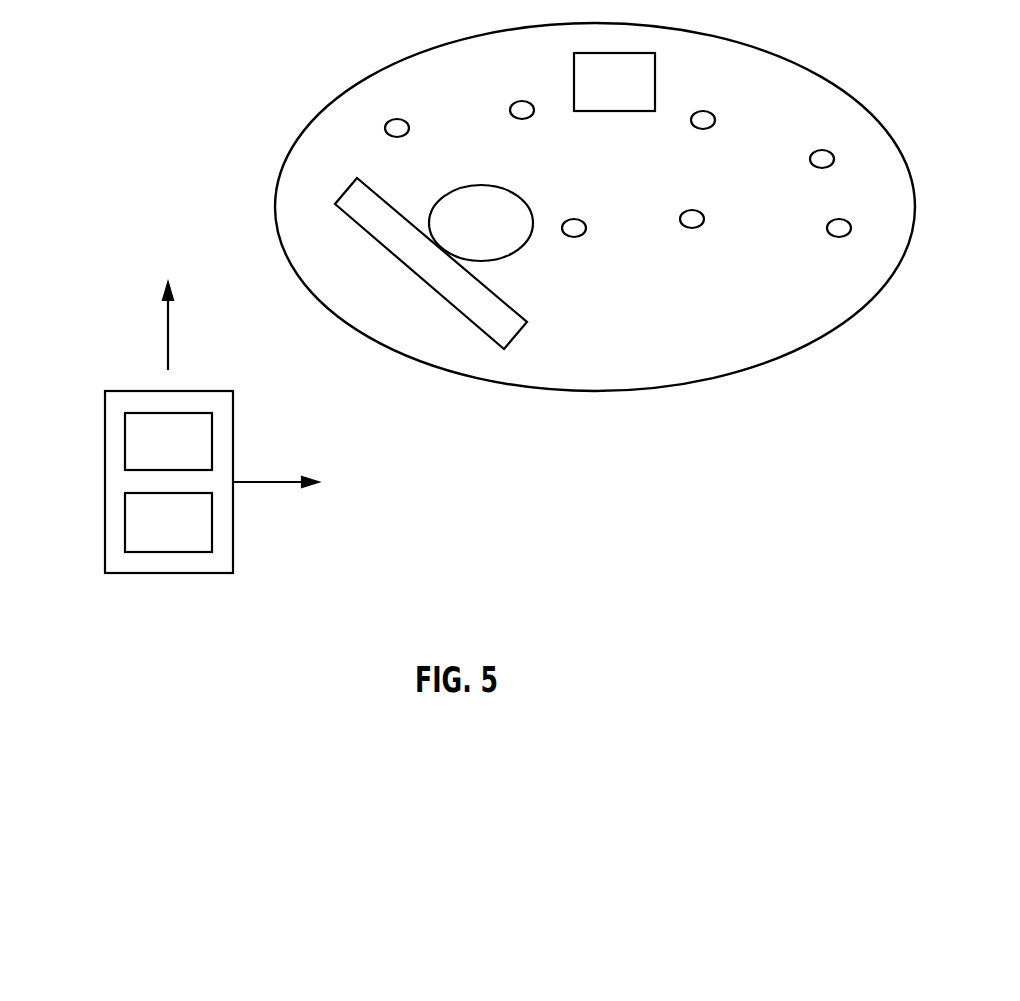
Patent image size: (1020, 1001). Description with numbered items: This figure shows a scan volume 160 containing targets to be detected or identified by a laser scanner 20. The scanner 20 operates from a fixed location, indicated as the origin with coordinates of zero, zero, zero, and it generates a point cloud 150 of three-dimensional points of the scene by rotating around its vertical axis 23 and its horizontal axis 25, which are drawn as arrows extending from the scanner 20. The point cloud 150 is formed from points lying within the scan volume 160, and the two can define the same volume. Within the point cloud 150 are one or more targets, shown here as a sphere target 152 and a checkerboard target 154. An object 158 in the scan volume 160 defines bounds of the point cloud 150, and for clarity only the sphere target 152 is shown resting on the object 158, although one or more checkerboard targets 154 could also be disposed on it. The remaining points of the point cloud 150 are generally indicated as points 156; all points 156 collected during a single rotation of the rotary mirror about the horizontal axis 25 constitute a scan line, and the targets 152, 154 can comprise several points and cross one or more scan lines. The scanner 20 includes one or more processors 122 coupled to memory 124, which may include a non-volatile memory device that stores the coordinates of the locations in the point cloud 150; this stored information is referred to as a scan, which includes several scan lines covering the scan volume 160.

The scan volume 160 is at (595, 198).
The point cloud 150 is at (806, 70).
The sphere target 152 is at (455, 190).
The checkerboard target 154 is at (655, 80).
The points 156 is at (689, 211).
The object 158 is at (519, 331).
The laser scanner 20 is at (132, 510).
The vertical axis 23 is at (166, 335).
The horizontal axis 25 is at (276, 480).
The processors 122 is at (193, 456).
The memory 124 is at (193, 536).